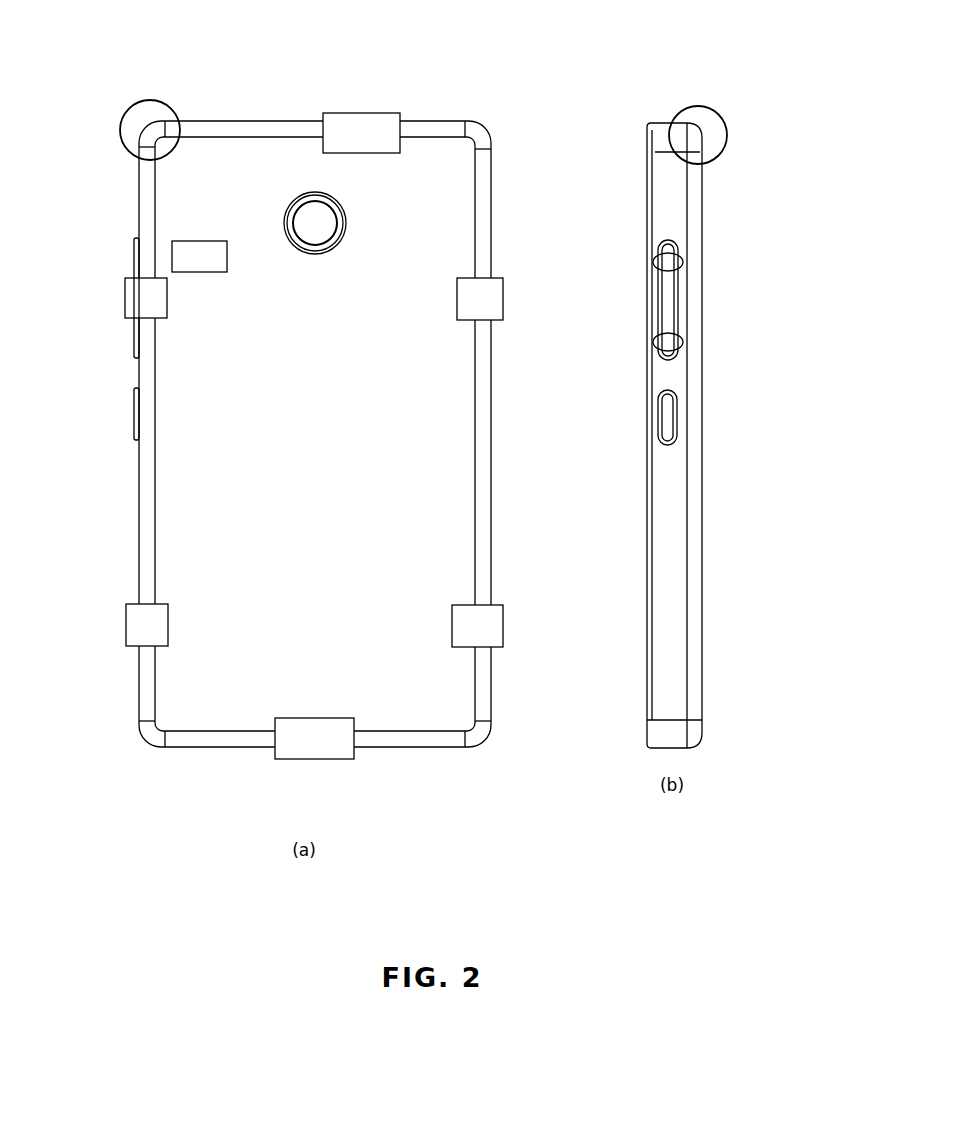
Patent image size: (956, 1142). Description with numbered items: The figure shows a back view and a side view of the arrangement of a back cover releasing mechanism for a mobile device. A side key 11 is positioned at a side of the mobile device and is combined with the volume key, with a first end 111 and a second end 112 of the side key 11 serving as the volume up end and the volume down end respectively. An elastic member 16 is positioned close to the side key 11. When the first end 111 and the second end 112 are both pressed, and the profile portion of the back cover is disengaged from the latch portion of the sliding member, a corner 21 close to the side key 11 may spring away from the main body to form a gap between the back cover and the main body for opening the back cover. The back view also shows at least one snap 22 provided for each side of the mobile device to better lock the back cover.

The corner 21 is at (128, 108).
The snap 22 is at (359, 111).
The elastic member 16 is at (230, 262).
The side key 11 is at (123, 320).
The first end 111 is at (684, 262).
The second end 112 is at (684, 343).